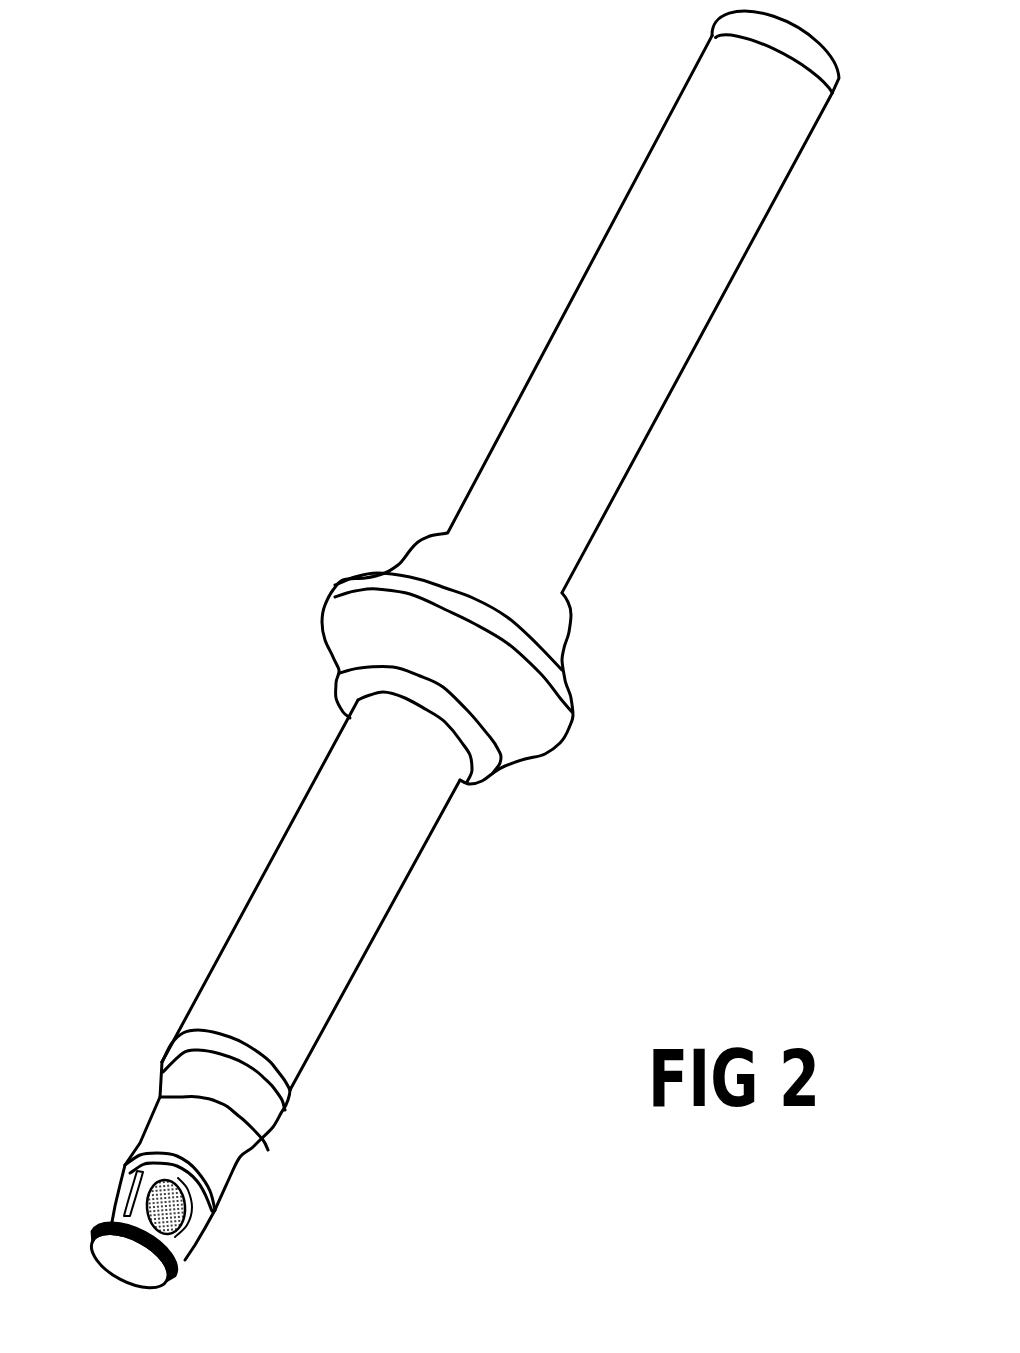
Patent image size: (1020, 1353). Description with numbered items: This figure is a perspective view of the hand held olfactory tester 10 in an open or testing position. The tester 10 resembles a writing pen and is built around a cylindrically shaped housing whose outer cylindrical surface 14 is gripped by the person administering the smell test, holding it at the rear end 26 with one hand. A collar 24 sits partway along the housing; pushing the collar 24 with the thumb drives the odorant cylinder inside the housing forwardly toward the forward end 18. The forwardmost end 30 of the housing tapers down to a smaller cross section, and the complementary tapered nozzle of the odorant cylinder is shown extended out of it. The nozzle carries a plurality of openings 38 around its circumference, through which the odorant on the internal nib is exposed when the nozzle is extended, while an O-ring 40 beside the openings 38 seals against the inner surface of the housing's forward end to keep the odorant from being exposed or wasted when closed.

The hand held olfactory tester 10 is at (583, 802).
The outer cylindrical surface 14 is at (338, 957).
The forward end 18 is at (305, 862).
The collar 24 is at (353, 585).
The rear end 26 is at (615, 303).
The forwardmost end 30 is at (160, 1130).
The openings 38 is at (117, 1193).
The O-ring 40 is at (172, 1268).